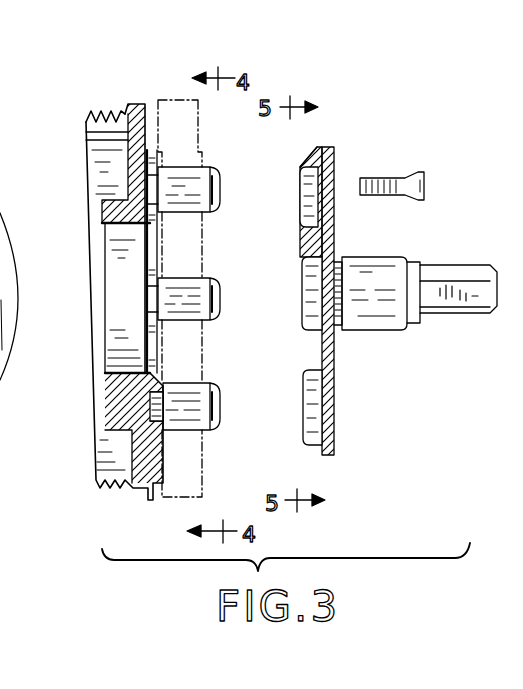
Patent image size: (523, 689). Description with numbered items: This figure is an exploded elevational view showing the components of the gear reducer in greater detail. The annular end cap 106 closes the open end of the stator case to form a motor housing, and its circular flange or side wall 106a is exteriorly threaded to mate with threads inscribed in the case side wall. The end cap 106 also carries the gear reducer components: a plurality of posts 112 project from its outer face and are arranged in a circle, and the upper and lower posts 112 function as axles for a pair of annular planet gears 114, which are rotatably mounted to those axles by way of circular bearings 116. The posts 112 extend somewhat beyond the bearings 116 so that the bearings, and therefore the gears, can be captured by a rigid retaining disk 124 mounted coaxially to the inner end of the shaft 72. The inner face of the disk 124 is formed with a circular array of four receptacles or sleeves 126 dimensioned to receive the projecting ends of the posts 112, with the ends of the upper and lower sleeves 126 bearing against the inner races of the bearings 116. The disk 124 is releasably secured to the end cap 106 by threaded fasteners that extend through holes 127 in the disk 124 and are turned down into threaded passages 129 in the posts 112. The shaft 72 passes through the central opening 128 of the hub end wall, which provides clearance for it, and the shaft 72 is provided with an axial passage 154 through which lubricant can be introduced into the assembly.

The end cap 106 is at (152, 510).
The circular flange or side wall 106a is at (86, 127).
The posts 112 is at (218, 215).
The planet gears 114 is at (200, 140).
The bearings 116 is at (196, 157).
The threaded passages 129 is at (222, 410).
The retaining disk 124 is at (336, 354).
The central opening 128 is at (334, 177).
The receptacles or sleeves 126 is at (299, 190).
The holes 127 is at (392, 177).
The shaft 72 is at (373, 262).
The axial passage 154 is at (460, 300).